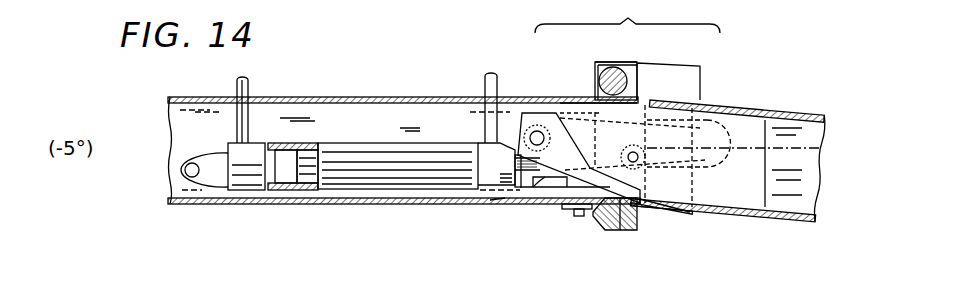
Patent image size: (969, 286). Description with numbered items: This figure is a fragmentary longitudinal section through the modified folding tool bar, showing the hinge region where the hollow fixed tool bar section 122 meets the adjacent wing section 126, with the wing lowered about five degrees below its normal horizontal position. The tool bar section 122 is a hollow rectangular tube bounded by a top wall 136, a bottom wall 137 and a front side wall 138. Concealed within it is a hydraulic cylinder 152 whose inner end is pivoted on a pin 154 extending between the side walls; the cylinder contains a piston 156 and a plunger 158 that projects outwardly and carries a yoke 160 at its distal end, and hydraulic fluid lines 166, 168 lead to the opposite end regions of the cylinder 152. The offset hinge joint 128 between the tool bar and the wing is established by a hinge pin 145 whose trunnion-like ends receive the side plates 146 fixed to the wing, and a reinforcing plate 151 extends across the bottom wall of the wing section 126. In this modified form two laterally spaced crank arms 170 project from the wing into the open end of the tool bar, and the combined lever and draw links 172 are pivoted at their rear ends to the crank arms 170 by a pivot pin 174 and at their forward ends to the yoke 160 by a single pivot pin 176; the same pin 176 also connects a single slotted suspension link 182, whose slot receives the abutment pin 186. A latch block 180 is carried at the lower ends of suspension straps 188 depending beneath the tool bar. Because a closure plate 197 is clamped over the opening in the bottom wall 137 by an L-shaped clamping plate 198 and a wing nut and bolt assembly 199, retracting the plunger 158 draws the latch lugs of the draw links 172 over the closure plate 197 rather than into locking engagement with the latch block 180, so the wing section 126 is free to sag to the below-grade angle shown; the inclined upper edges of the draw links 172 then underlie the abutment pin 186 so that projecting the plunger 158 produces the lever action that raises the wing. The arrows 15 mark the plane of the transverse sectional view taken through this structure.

The tool bar section 122 is at (338, 97).
The top wall 136 is at (288, 97).
The front side wall 138 is at (370, 112).
The hydraulic fluid line 166 is at (248, 86).
The hydraulic fluid line 168 is at (486, 85).
The pin 154 is at (186, 171).
The hydraulic cylinder 152 is at (374, 175).
The piston 156 is at (289, 178).
The plunger 158 is at (311, 173).
The bottom wall 137 is at (418, 202).
The pivot pin 174 is at (517, 140).
The yoke 160 is at (540, 193).
The closure plate 197 is at (545, 190).
The L-shaped clamping plate 198 is at (565, 208).
The wing nut and bolt assembly 199 is at (580, 216).
The pivot pin 176 is at (579, 158).
The abutment pin 186 is at (632, 149).
The hinge joint 128 is at (615, 62).
The hinge pin 145 is at (622, 72).
The side plates 146 is at (690, 80).
The draw links 172 is at (559, 103).
The latch block 180 is at (637, 241).
The suspension straps 188 is at (638, 236).
The wing section 126 is at (802, 110).
The slotted suspension link 182 is at (722, 113).
The crank arms 170 is at (744, 189).
The reinforcing plate 151 is at (687, 212).
The section line FIG. 15 is at (525, 120).